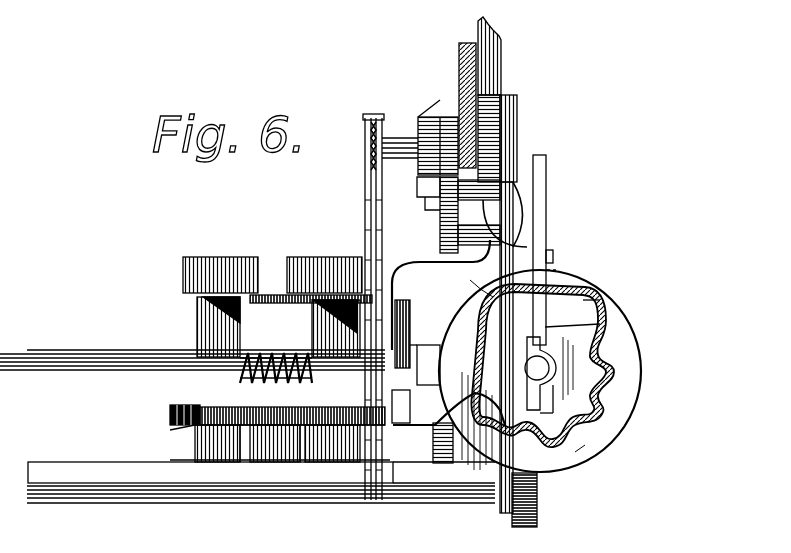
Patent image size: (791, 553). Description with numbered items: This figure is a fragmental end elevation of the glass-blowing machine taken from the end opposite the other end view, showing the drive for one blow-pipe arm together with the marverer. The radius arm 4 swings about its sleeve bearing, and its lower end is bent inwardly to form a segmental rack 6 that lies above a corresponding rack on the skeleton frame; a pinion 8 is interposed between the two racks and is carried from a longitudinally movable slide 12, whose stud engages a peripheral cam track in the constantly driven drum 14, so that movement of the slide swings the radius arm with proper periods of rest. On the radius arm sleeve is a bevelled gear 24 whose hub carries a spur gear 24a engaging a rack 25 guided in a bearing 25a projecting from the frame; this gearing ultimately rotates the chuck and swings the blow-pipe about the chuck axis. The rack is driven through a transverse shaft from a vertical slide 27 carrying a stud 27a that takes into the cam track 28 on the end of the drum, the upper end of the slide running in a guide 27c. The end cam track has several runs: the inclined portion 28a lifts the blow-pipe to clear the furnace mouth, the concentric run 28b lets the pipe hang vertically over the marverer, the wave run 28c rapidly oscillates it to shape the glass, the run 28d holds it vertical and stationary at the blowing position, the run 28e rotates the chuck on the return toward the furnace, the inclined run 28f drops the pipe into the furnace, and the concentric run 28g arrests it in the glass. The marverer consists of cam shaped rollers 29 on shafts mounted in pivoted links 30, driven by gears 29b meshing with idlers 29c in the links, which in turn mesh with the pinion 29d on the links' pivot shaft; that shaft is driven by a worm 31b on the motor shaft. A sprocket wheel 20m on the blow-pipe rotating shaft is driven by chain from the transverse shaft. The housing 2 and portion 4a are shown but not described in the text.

The housing 2 is at (503, 143).
The radius arm 4 is at (485, 50).
The plate extension 4a is at (418, 125).
The segmental rack 6 is at (410, 310).
The pinion 8 is at (420, 345).
The slide 12 is at (430, 373).
The drum 14 is at (613, 407).
The sprocket wheel 20m is at (372, 137).
The bevelled gear 24 is at (460, 58).
The spur gear 24a is at (450, 110).
The rack 25 is at (447, 187).
The bearing 25a is at (427, 160).
The vertical slide 27 is at (547, 190).
The stud 27a is at (547, 280).
The guide 27c is at (553, 257).
The cam track 28 is at (617, 317).
The inclined portion 28a is at (470, 280).
The concentric run 28b is at (583, 300).
The wave run 28c is at (617, 380).
The run 28d is at (490, 390).
The run 28e is at (470, 407).
The inclined run 28f is at (585, 445).
The concentric run 28g is at (600, 324).
The cam shaped rollers 29 is at (277, 288).
The gears 29b is at (170, 423).
The idlers 29c is at (197, 430).
The pinion 29d is at (270, 478).
The links 30 is at (195, 385).
The worm 31b is at (280, 353).